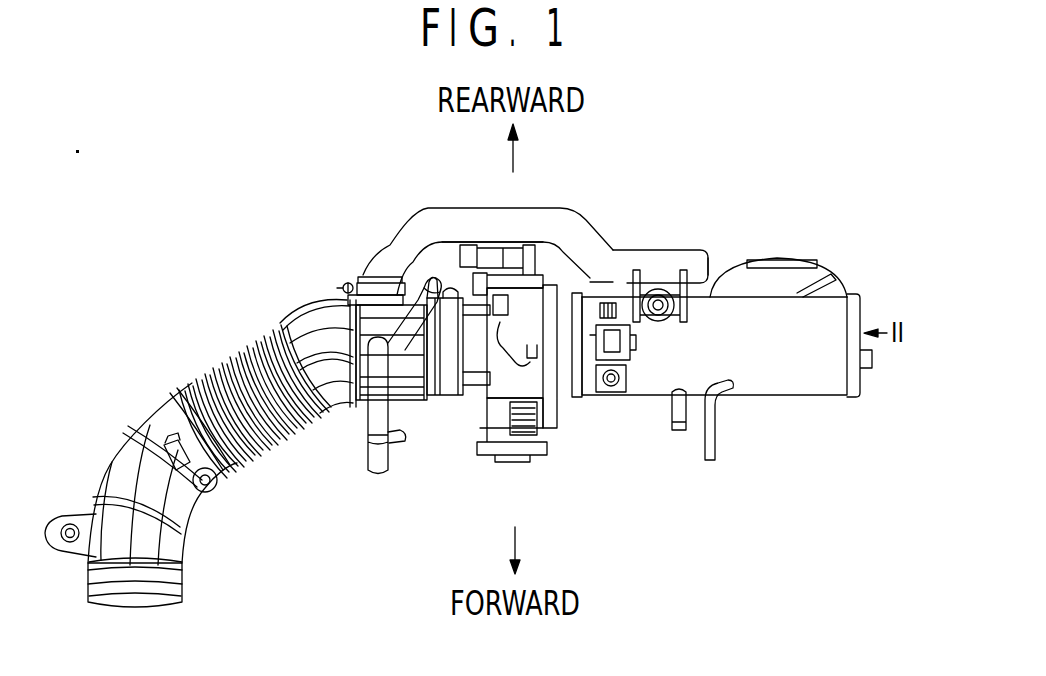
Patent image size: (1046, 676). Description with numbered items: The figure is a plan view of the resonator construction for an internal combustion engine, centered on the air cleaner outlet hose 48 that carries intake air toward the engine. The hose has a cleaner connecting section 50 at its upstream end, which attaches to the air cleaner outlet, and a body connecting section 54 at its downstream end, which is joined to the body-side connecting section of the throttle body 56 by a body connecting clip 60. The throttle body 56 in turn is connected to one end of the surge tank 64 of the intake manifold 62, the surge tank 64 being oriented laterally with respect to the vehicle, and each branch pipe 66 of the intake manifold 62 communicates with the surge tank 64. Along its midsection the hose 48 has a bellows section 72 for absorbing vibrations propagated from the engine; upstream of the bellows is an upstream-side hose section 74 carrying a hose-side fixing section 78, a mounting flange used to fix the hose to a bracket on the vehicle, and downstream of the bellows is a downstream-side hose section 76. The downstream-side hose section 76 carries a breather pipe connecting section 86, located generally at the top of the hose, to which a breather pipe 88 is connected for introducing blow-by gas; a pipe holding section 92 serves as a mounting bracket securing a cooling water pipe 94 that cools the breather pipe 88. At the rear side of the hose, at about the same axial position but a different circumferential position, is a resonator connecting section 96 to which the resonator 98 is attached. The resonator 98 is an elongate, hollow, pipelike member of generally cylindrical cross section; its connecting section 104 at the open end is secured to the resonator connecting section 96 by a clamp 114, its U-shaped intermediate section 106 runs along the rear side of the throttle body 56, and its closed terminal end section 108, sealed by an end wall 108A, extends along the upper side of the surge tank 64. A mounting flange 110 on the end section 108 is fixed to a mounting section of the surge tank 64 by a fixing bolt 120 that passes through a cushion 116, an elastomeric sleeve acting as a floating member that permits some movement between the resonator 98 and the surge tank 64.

The air cleaner outlet hose 48 is at (199, 461).
The cleaner connecting section 50 is at (168, 592).
The body connecting section 54 is at (437, 400).
The throttle body 56 is at (442, 339).
The body connecting clip 60 is at (453, 400).
The intake manifold 62 is at (722, 313).
The surge tank 64 is at (810, 384).
The branch pipe 66 is at (742, 266).
The bellows section 72 is at (213, 367).
The upstream-side hose section 74 is at (128, 448).
The downstream-side hose section 76 is at (307, 343).
The hose-side fixing section 78 is at (82, 516).
The breather pipe connecting section 86 is at (355, 416).
The breather pipe 88 is at (373, 422).
The pipe holding section 92 is at (435, 250).
The cooling water pipe 94 is at (413, 412).
The resonator connecting section 96 is at (333, 303).
The resonator 98 is at (605, 298).
The connecting section 104 is at (373, 272).
The intermediate section 106 is at (480, 222).
The terminal end section 108 is at (660, 257).
The end wall 108A is at (713, 252).
The mounting flange 110 is at (648, 287).
The clamp 114 is at (350, 276).
The cushion 116 is at (680, 313).
The fixing bolt 120 is at (658, 315).